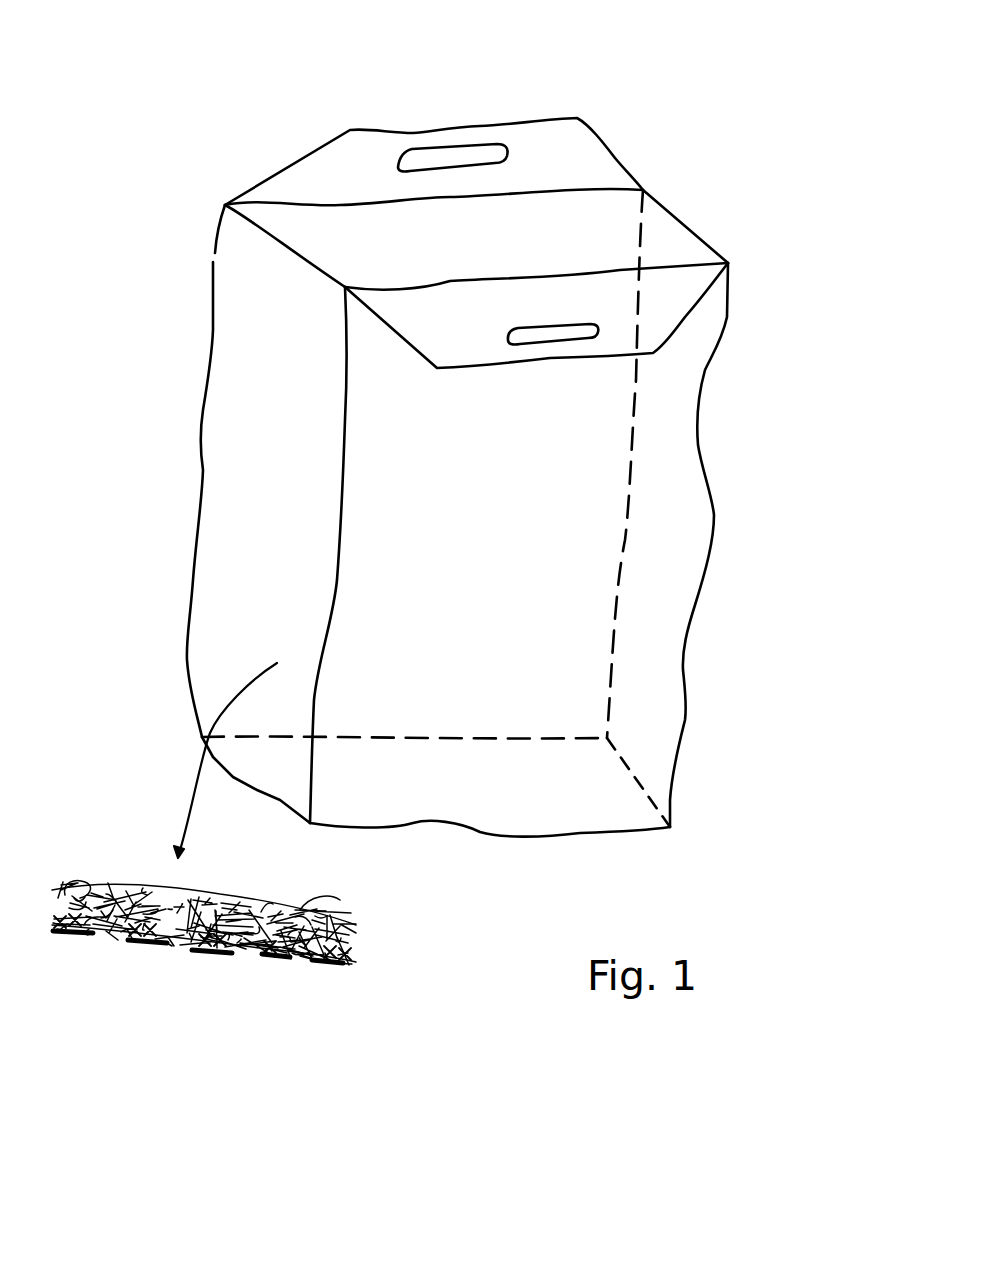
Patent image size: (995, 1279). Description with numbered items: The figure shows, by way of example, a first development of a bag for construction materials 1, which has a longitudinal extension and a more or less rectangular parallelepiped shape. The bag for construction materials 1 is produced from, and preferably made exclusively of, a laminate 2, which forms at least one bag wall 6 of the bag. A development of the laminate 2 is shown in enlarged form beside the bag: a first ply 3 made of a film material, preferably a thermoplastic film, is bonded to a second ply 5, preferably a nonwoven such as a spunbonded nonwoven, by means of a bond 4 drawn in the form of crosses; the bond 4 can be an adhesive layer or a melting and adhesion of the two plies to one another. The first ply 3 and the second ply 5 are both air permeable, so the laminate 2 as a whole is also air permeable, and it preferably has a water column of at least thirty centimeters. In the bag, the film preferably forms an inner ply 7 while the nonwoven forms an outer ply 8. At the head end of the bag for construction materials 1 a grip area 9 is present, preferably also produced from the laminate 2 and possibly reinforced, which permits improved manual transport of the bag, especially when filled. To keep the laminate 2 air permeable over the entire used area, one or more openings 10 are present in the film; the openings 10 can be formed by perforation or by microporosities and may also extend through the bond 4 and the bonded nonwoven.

The bag for construction materials 1 is at (668, 157).
The laminate 2 is at (714, 507).
The first ply 3 is at (337, 960).
The bond 4 is at (350, 955).
The second ply 5 is at (277, 907).
The bag wall 6 is at (647, 645).
The inner ply 7 is at (283, 243).
The outer ply 8 is at (256, 290).
The grip area 9 is at (456, 124).
The openings 10 is at (103, 950).